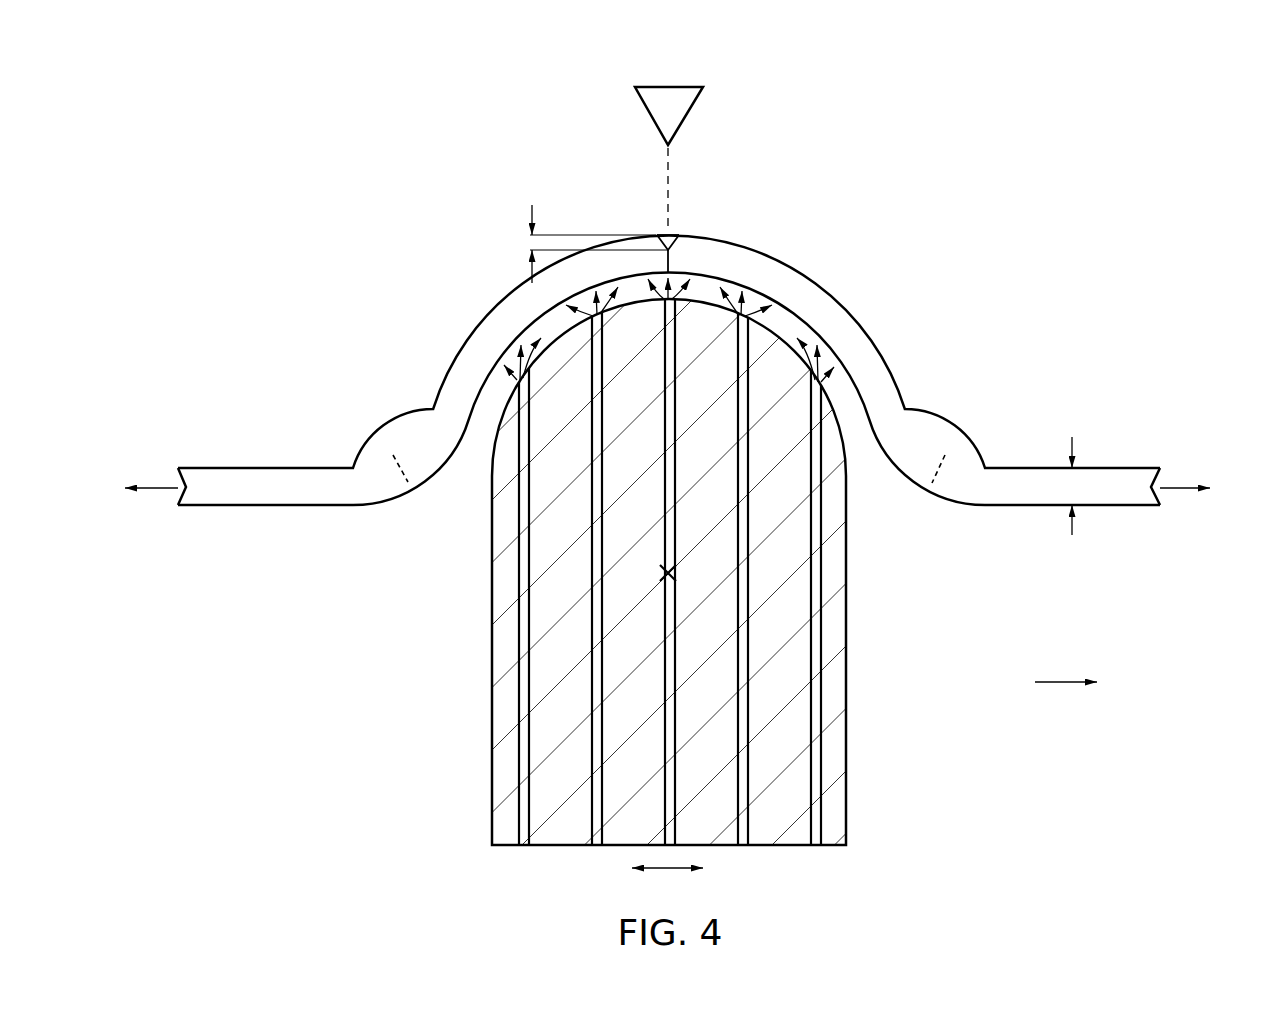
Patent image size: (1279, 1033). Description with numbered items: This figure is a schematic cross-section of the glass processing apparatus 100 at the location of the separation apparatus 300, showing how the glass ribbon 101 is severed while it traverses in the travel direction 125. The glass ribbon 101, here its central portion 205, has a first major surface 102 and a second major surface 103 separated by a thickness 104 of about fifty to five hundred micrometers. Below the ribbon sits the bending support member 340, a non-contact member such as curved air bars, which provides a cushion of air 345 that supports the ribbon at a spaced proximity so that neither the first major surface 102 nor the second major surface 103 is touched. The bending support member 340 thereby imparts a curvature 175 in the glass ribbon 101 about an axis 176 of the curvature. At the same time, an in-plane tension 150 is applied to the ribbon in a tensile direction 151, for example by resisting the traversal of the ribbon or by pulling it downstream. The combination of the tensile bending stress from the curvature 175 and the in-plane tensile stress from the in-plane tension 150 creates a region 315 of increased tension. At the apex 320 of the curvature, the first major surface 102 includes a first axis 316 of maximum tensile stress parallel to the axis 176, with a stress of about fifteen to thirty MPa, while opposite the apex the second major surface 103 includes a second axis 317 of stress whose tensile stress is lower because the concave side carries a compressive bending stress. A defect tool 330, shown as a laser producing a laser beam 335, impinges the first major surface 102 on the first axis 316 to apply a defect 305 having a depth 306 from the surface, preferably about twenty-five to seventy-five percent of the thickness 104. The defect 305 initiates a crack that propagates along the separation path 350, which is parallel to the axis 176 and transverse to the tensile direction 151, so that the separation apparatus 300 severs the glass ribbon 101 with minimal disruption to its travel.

The glass processing apparatus 100 is at (1032, 128).
The glass ribbon 101 is at (218, 505).
The first major surface 102 is at (992, 467).
The second major surface 103 is at (972, 508).
The thickness 104 is at (1072, 486).
The travel direction 125 is at (1057, 682).
The in-plane tension 150 is at (667, 490).
The tensile direction 151 is at (678, 870).
The curvature 175 is at (460, 307).
The axis of the curvature 176 is at (672, 573).
The central portion 205 is at (232, 468).
The separation apparatus 300 is at (848, 128).
The defect 305 is at (690, 243).
The depth 306 is at (532, 207).
The region of increased tension 315 is at (832, 282).
The first axis of maximum tensile stress 316 is at (668, 235).
The second axis of stress 317 is at (667, 258).
The apex 320 is at (672, 236).
The defect tool 330 is at (670, 87).
The laser beam 335 is at (676, 163).
The bending support member 340 is at (540, 653).
The cushion of air 345 is at (485, 427).
The separation path 350 is at (675, 258).